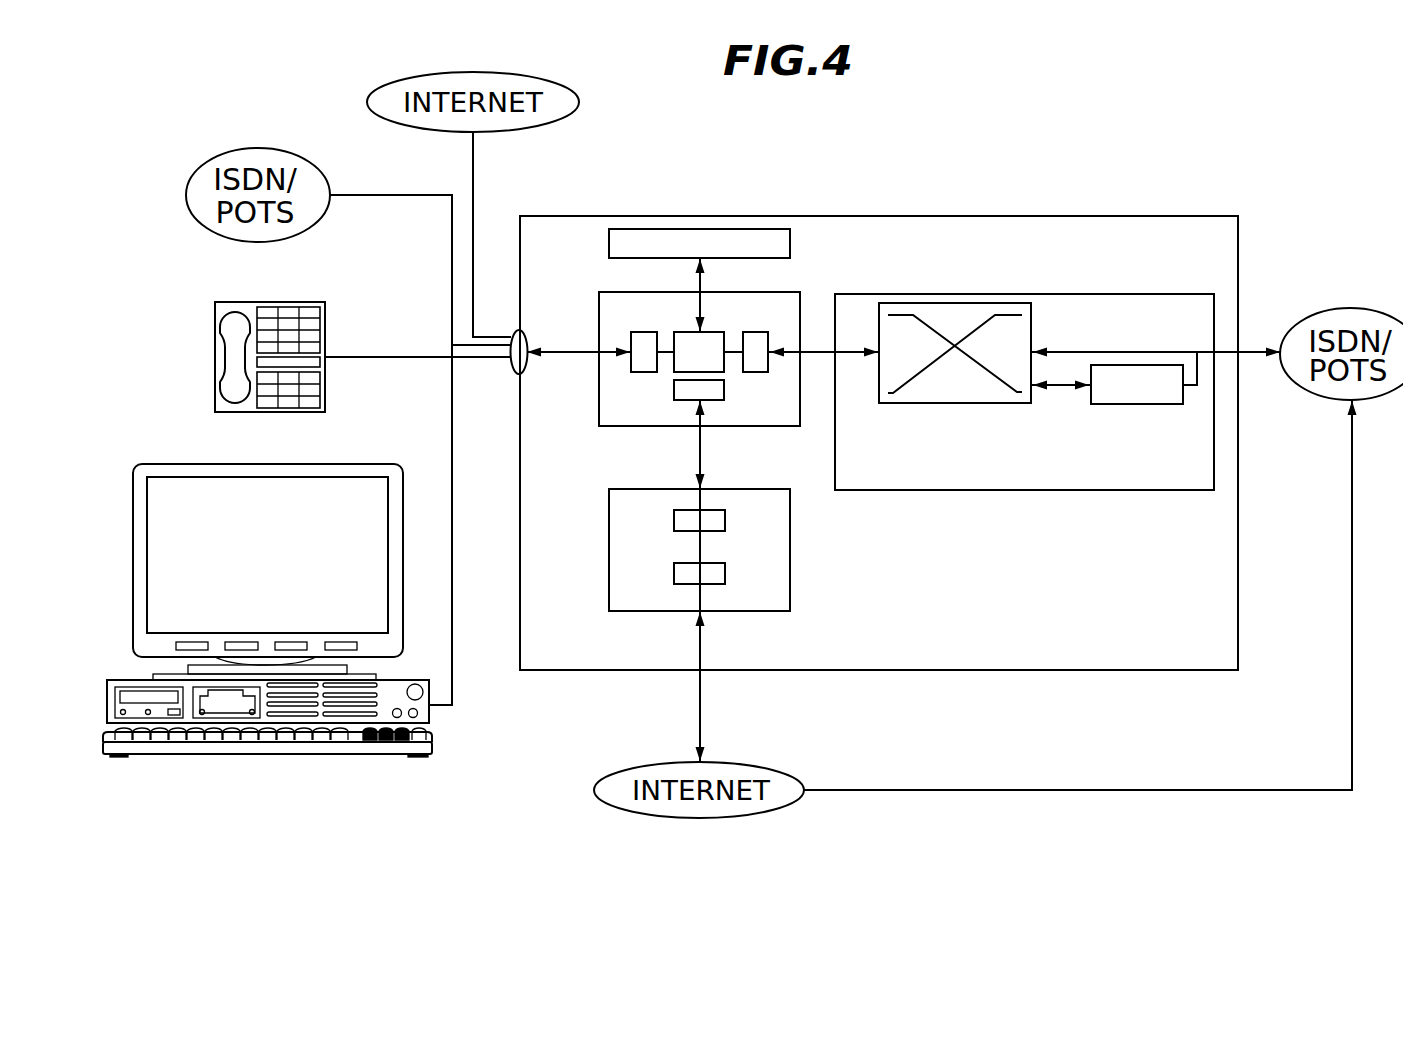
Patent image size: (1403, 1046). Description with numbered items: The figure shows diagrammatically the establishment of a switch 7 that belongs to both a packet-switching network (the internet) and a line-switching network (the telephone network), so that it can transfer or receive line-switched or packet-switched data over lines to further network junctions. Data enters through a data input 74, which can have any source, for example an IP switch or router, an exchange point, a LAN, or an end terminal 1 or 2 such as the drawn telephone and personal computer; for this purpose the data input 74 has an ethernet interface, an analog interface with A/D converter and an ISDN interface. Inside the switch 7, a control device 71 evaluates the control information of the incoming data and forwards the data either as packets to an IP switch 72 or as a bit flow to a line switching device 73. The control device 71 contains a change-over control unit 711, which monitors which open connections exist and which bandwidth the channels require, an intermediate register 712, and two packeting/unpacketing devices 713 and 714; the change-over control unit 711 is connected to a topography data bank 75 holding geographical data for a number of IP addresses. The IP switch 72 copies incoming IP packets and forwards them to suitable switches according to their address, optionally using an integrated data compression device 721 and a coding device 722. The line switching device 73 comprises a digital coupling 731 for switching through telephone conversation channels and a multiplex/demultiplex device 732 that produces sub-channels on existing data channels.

The end terminal 1 is at (290, 302).
The end terminal 2 is at (368, 778).
The switch 7 is at (947, 209).
The control device 71 is at (599, 386).
The change-over control unit 711 is at (724, 373).
The intermediate register 712 is at (633, 332).
The packeting/unpacketing device 713 is at (770, 333).
The packeting/unpacketing device 714 is at (674, 390).
The IP switch 72 is at (625, 489).
The data compression device 721 is at (674, 518).
The coding device 722 is at (674, 571).
The line switching device 73 is at (1122, 294).
The digital coupling 731 is at (955, 303).
The multiplex/demultiplex device 732 is at (1137, 404).
The data input 74 is at (510, 378).
The topography data bank 75 is at (657, 229).